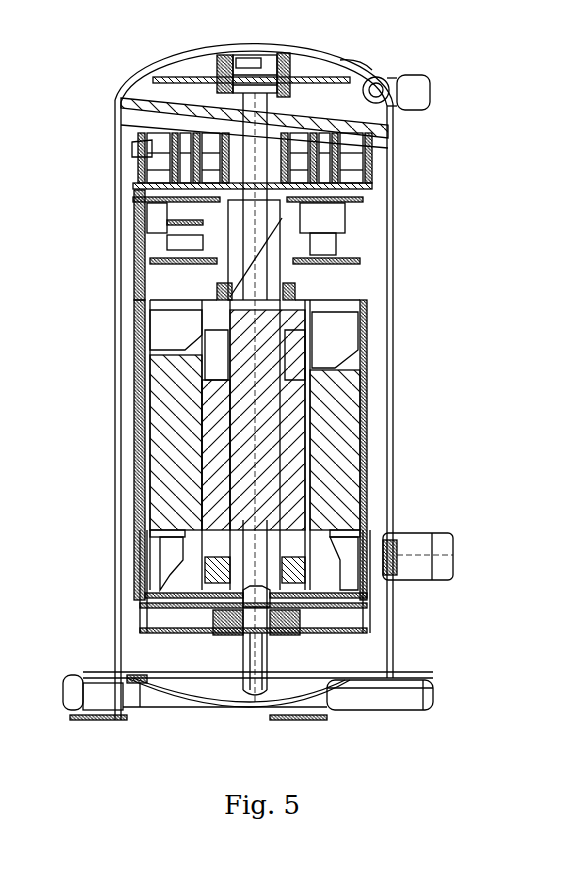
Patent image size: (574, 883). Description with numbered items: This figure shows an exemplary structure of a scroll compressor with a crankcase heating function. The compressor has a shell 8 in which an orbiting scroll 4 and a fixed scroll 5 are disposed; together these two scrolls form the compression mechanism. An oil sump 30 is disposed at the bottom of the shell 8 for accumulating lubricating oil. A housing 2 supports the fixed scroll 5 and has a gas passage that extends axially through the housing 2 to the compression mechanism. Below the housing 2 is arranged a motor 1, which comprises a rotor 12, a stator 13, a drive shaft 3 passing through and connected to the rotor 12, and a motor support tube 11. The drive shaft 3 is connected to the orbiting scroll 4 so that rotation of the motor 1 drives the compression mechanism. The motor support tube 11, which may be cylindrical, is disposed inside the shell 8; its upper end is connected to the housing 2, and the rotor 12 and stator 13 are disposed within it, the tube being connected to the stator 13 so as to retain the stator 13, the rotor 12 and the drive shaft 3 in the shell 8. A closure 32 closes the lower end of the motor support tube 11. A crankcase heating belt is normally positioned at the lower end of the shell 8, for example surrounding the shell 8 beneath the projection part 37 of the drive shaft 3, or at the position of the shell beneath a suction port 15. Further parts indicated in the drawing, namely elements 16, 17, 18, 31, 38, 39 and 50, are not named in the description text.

The motor 1 is at (367, 417).
The housing 2 is at (217, 272).
The drive shaft 3 is at (280, 478).
The orbiting scroll 4 is at (182, 128).
The fixed scroll 5 is at (193, 90).
The shell 8 is at (393, 312).
The motor support tube 11 is at (393, 365).
The rotor 12 is at (215, 392).
The stator 13 is at (173, 448).
The suction port 15 is at (383, 537).
The lower frame 16 is at (277, 510).
The rotor core 17 is at (310, 449).
The casing side wall 18 is at (115, 273).
The oil sump 30 is at (167, 663).
The upper bearing 31 is at (360, 287).
The closure 32 is at (327, 600).
The projection part 37 is at (115, 210).
The balance weight 38 is at (236, 323).
The end ring 39 is at (250, 357).
The bottom cover 50 is at (330, 620).